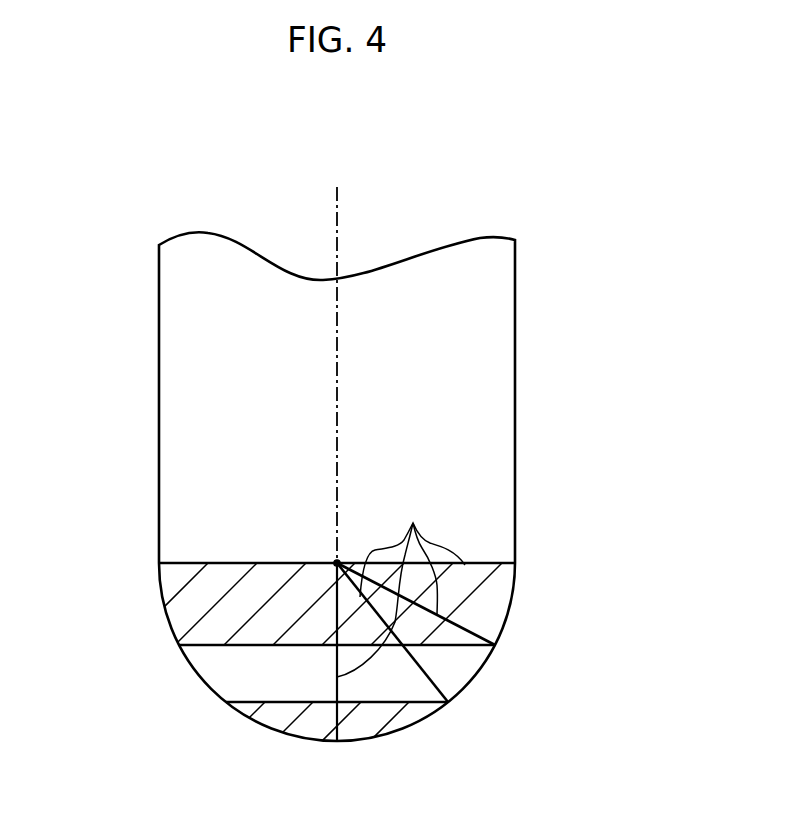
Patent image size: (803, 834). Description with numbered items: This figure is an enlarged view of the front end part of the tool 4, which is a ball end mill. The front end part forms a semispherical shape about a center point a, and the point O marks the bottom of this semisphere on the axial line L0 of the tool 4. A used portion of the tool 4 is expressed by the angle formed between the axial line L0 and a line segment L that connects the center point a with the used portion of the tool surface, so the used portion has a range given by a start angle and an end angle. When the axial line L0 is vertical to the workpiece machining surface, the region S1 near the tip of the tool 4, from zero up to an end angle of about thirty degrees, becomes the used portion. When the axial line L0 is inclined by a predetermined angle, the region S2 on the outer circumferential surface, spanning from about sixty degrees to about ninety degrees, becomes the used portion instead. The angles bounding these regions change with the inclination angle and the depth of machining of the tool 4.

The tool 4 is at (515, 388).
The axial line L0 is at (336, 444).
The center point a is at (328, 551).
The bottom point on optical axis O is at (339, 767).
The line segment L is at (401, 586).
The region S1 is at (370, 735).
The region S2 is at (193, 604).